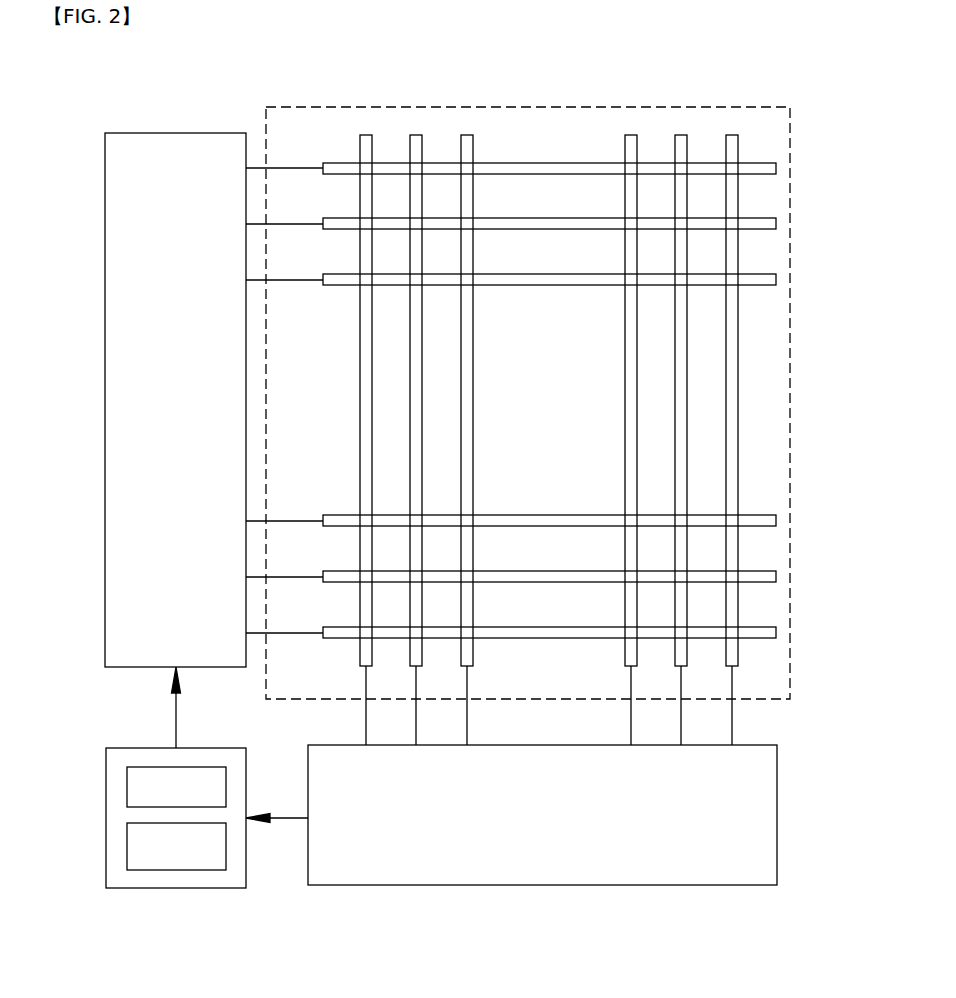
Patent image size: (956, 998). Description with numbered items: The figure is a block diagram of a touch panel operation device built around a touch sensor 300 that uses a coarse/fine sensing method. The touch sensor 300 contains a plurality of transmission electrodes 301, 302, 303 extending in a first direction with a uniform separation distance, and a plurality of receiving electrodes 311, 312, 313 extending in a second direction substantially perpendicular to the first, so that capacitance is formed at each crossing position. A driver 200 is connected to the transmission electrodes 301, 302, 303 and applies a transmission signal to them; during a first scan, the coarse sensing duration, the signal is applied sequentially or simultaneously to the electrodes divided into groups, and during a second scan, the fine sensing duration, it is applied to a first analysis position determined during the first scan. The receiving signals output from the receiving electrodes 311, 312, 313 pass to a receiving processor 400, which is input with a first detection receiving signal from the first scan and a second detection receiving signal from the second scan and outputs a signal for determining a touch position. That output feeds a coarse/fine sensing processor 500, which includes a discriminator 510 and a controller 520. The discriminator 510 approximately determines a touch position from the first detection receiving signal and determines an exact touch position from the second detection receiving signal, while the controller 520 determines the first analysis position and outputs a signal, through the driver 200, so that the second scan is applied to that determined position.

The driver 200 is at (175, 133).
The touch sensor 300 is at (688, 107).
The transmission electrode 301 is at (548, 162).
The transmission electrode 302 is at (548, 218).
The transmission electrode 303 is at (548, 274).
The receiving electrode 311 is at (366, 134).
The receiving electrode 312 is at (416, 134).
The receiving electrode 313 is at (467, 134).
The receiving processor 400 is at (777, 814).
The coarse/fine sensing processor 500 is at (106, 818).
The discriminator 510 is at (195, 871).
The controller 520 is at (204, 767).